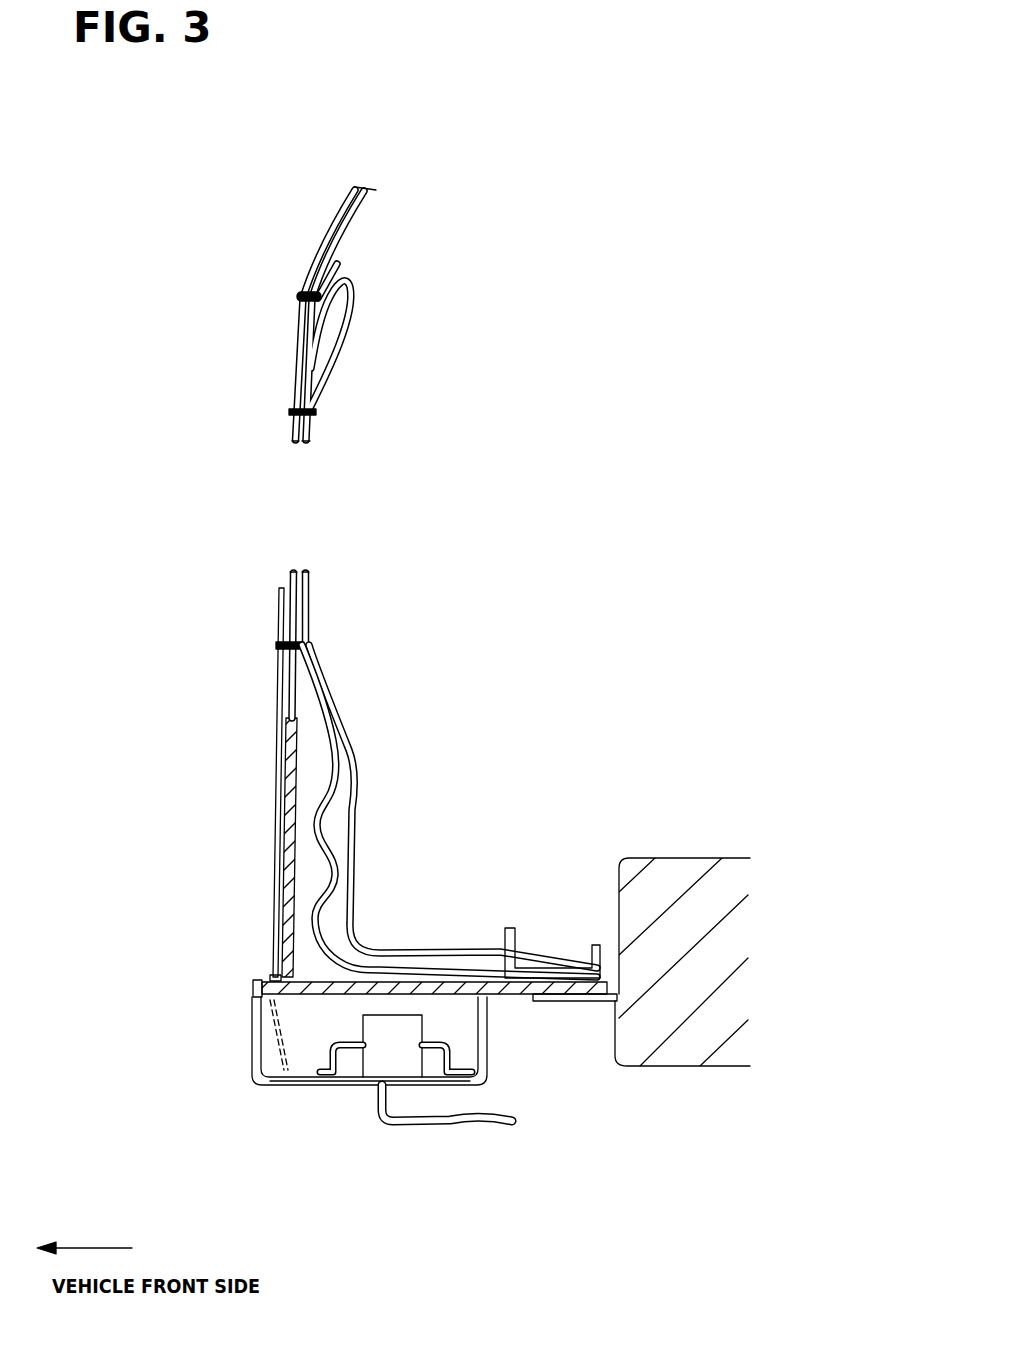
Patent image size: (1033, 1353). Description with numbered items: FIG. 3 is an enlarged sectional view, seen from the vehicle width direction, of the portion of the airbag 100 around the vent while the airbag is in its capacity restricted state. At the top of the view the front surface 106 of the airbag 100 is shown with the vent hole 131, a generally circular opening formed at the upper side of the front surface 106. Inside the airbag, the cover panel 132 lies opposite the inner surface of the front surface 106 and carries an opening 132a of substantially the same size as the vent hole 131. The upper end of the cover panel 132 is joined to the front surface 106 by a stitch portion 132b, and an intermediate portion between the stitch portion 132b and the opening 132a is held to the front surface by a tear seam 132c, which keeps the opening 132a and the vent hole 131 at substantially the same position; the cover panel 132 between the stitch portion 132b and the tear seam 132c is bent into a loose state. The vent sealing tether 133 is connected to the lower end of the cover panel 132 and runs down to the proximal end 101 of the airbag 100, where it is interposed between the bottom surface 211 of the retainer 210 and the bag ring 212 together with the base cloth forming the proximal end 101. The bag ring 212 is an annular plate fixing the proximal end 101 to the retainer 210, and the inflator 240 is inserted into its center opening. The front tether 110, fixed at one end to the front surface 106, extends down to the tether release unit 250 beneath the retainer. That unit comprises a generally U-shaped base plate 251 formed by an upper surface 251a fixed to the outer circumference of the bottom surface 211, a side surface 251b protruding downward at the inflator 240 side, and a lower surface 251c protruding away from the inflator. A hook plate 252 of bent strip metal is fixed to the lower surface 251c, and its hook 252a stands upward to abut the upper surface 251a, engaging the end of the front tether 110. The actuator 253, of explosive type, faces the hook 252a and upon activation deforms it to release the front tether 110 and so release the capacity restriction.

The airbag 100 is at (184, 400).
The proximal end 101 is at (398, 965).
The front surface 106 is at (290, 583).
The front tether 110 is at (272, 840).
The vent hole 131 is at (259, 512).
The cover panel 132 is at (313, 391).
The opening 132a is at (343, 509).
The stitch portion 132b is at (300, 296).
The tear seam 132c is at (308, 422).
The vent sealing tether 133 is at (355, 815).
The retainer 210 is at (286, 780).
The bottom surface 211 is at (340, 980).
The bag ring 212 is at (553, 965).
The inflator 240 is at (750, 912).
The tether release unit 250 is at (479, 1150).
The base plate 251 is at (712, 1098).
The upper surface 251a is at (432, 997).
The side surface 251b is at (486, 1045).
The lower surface 251c is at (472, 1085).
The hook plate 252 is at (303, 1087).
The hook 252a is at (255, 1038).
The actuator 253 is at (380, 1079).